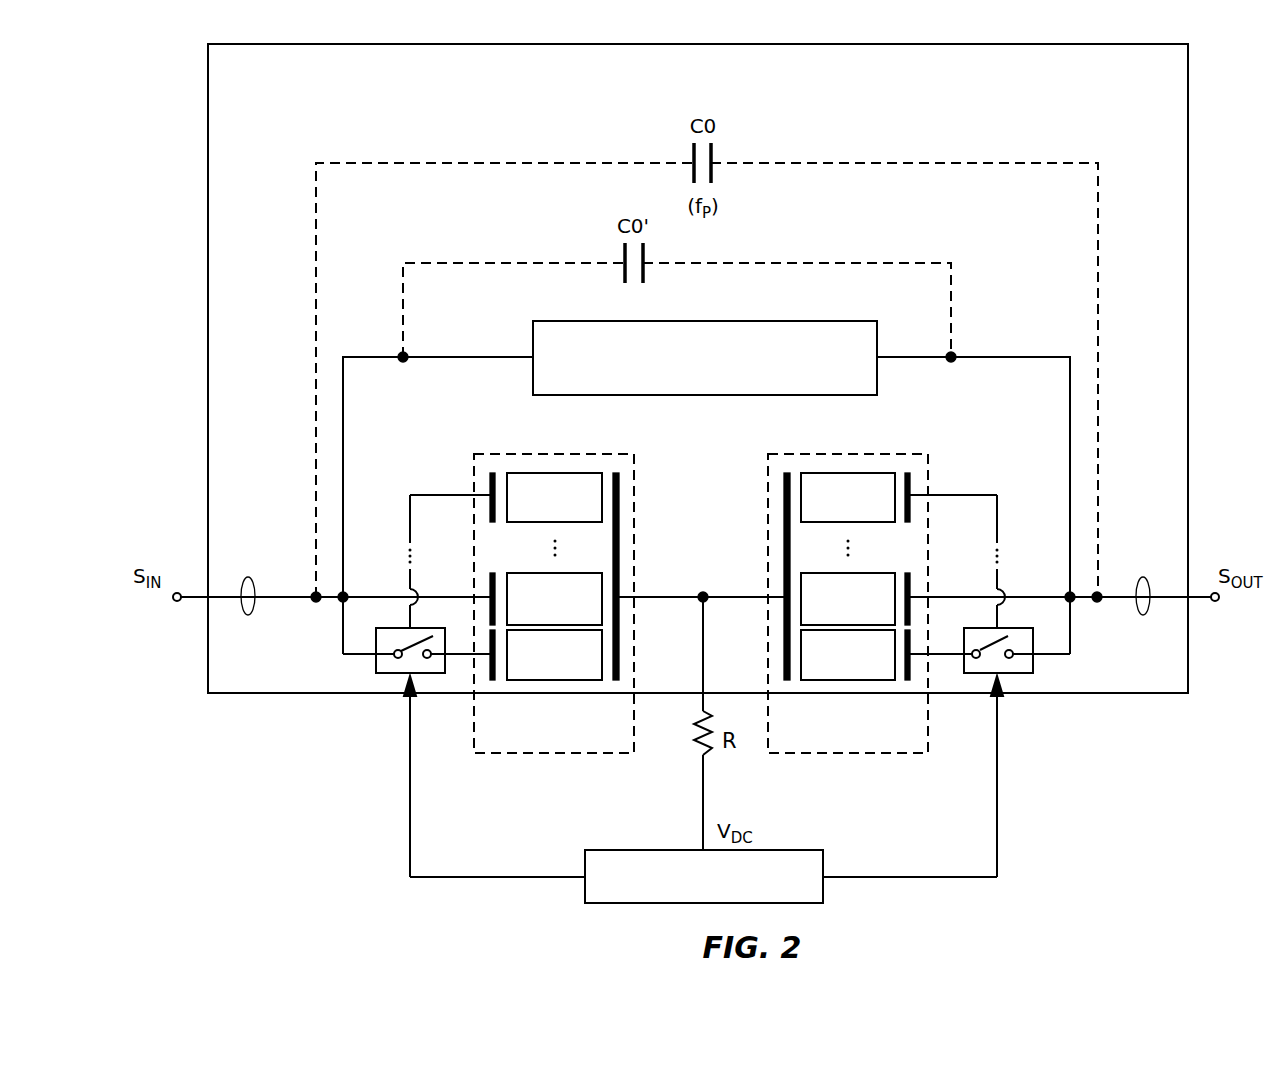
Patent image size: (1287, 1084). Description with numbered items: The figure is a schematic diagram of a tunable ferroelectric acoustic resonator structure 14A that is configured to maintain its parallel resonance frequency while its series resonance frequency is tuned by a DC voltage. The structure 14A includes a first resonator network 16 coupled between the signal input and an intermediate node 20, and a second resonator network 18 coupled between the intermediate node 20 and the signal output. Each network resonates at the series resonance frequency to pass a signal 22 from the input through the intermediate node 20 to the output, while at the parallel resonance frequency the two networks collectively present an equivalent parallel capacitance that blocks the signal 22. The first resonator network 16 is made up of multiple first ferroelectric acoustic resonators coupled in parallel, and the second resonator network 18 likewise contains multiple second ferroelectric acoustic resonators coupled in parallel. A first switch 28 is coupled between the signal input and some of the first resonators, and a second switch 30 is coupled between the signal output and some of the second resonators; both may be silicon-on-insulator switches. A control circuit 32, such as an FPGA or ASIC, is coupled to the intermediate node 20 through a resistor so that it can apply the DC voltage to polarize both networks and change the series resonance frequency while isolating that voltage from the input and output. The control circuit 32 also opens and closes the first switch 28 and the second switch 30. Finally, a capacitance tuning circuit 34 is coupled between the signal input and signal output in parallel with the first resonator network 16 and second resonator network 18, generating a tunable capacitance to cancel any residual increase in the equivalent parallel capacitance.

The tunable ferroelectric acoustic resonator structure 14A is at (698, 368).
The first resonator network 16 is at (551, 635).
The second resonator network 18 is at (848, 635).
The intermediate node 20 is at (704, 592).
The signal 22 is at (249, 578).
The first switch 28 is at (384, 676).
The second switch 30 is at (1014, 676).
The control circuit 32 is at (704, 876).
The capacitance tuning circuit 34 is at (705, 358).